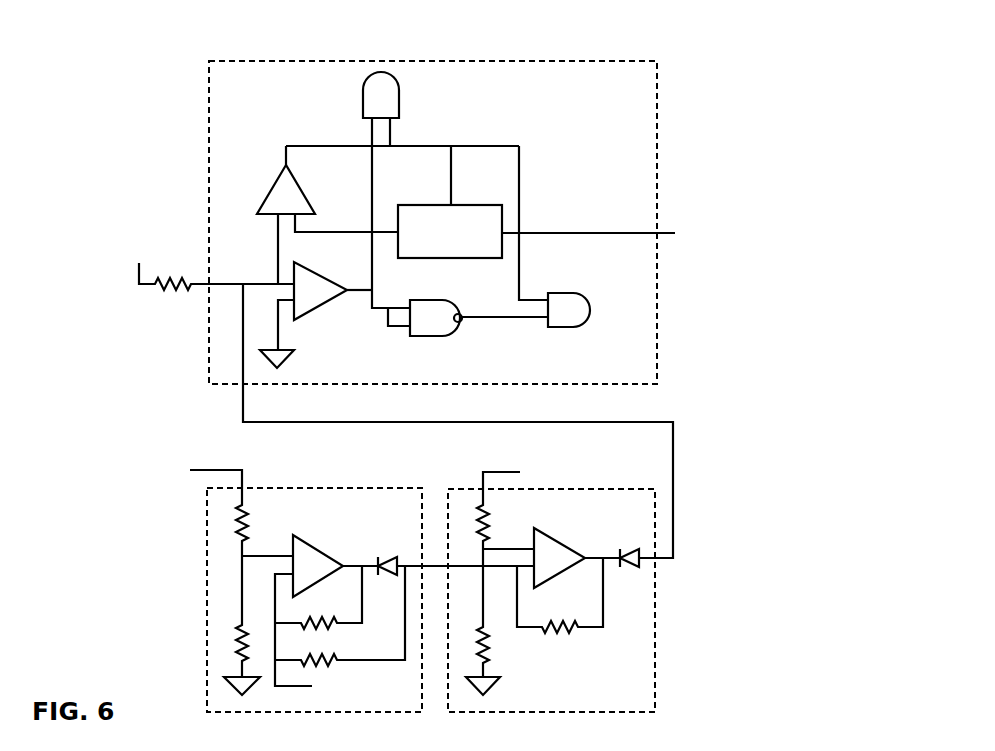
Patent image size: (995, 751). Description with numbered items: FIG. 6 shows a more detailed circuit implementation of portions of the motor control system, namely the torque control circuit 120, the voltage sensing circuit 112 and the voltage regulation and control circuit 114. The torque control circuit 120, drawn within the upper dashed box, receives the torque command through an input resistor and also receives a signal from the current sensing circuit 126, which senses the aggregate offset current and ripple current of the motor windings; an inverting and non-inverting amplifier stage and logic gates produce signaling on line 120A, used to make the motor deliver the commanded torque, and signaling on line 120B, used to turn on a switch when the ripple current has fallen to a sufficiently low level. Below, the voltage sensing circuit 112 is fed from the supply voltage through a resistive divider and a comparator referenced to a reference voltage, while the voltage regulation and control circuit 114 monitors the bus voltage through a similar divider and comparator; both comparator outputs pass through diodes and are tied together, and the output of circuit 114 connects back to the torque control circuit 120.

The torque control circuit 120 is at (443, 287).
The line 120A is at (381, 72).
The line 120B is at (590, 309).
The current sensing circuit 126 is at (631, 234).
The voltage sensing circuit 112 is at (338, 601).
The voltage regulation and control circuit 114 is at (551, 601).